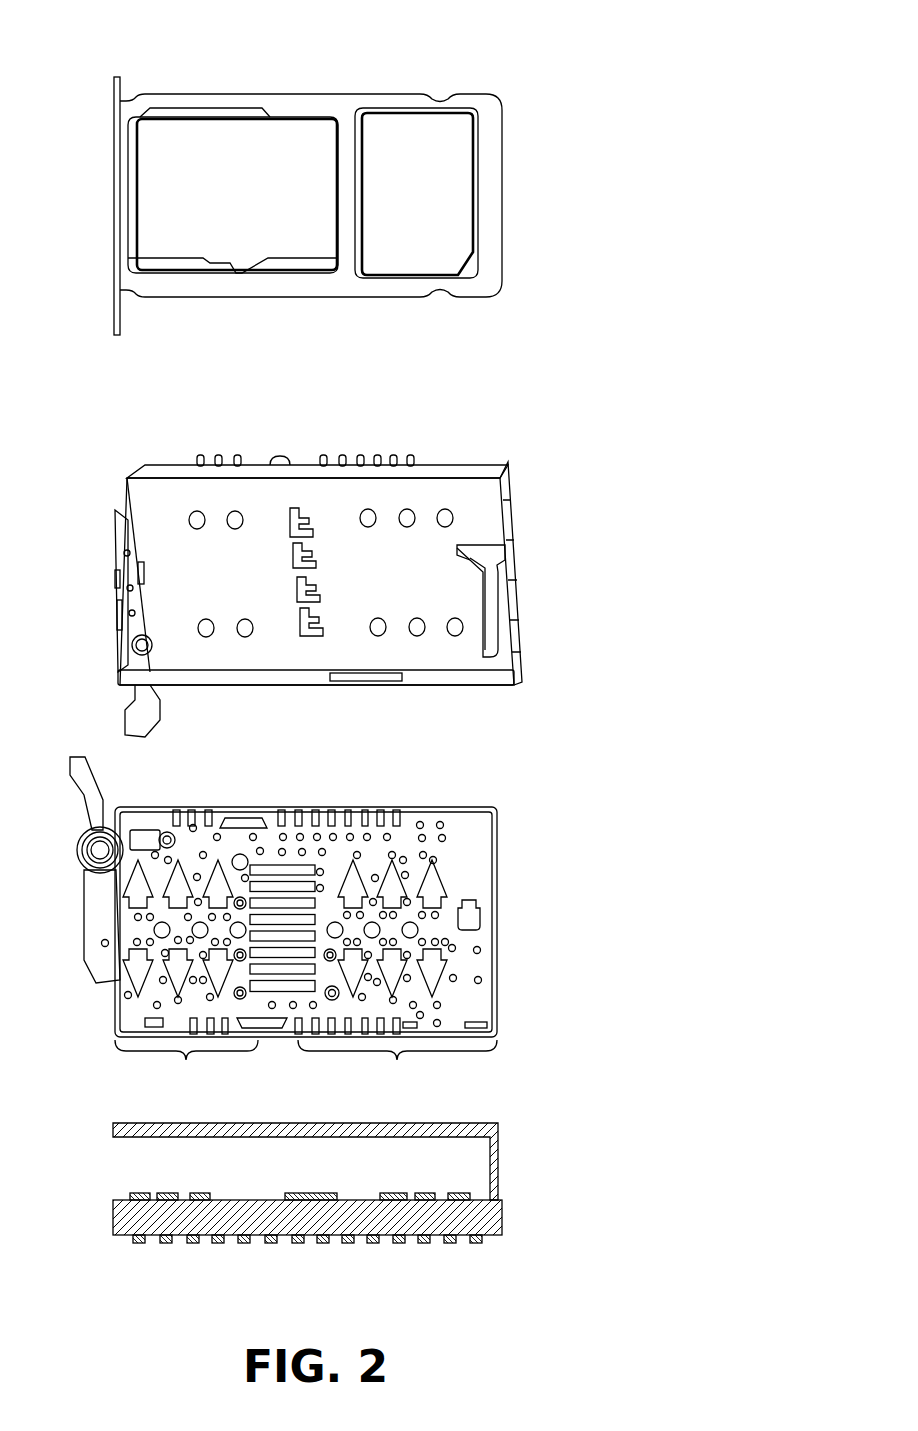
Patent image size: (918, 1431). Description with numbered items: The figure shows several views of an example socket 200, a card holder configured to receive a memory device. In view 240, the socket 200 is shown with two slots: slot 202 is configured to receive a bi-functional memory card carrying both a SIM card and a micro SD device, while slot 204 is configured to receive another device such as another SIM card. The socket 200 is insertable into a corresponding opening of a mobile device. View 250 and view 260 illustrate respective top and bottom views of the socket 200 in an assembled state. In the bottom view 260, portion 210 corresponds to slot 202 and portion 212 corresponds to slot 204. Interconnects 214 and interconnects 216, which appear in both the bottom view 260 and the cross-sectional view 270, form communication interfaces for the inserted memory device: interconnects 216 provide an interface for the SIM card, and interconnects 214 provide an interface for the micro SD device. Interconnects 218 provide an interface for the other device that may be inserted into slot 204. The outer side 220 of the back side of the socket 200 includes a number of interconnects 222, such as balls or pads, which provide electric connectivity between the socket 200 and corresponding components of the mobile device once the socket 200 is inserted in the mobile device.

The socket 200 is at (104, 36).
The slot 202 is at (165, 160).
The slot 204 is at (400, 136).
The view 240 is at (539, 197).
The view 250 is at (539, 549).
The view 260 is at (510, 888).
The portion 210 is at (186, 1067).
The portion 212 is at (397, 1067).
The interconnects 214 is at (178, 866).
The interconnects 216 is at (280, 900).
The interconnects 218 is at (412, 932).
The cross-sectional view 270 is at (516, 1164).
The outer side 220 is at (506, 1266).
The interconnects 222 is at (140, 1244).